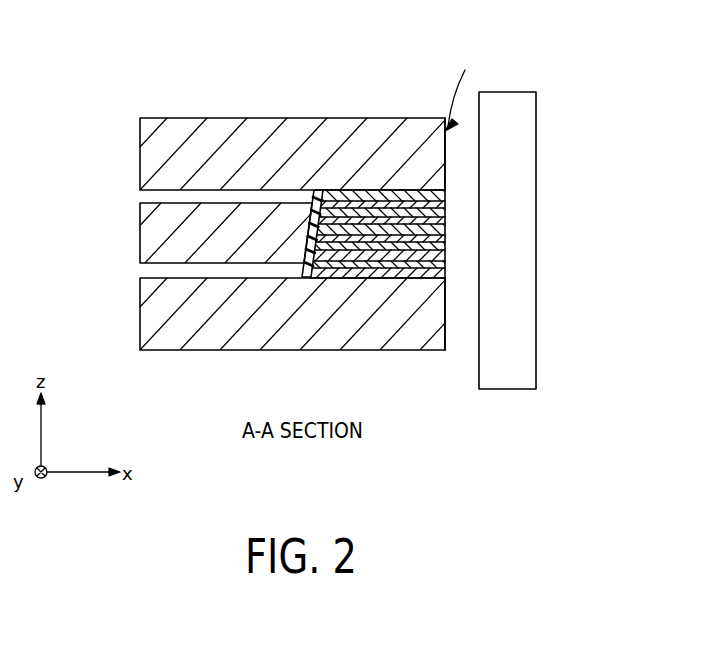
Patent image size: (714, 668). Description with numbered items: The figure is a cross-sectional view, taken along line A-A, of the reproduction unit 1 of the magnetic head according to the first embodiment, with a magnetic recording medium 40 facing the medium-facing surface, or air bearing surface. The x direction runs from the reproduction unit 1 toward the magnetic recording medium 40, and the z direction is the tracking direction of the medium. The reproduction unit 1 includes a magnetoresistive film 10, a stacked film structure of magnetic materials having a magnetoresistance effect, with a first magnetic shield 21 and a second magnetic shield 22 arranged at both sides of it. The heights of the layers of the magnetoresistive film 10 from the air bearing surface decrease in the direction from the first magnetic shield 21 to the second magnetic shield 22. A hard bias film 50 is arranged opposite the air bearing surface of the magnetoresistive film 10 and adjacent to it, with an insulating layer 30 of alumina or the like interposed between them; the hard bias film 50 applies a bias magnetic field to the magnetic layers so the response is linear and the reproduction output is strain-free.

The reproduction unit 1 is at (319, 58).
The second magnetic shield 22 is at (142, 160).
The hard bias film 50 is at (142, 234).
The first magnetic shield 21 is at (142, 320).
The insulating layer 30 is at (312, 205).
The magnetoresistive film 10 is at (450, 192).
The magnetic recording medium 40 is at (523, 210).